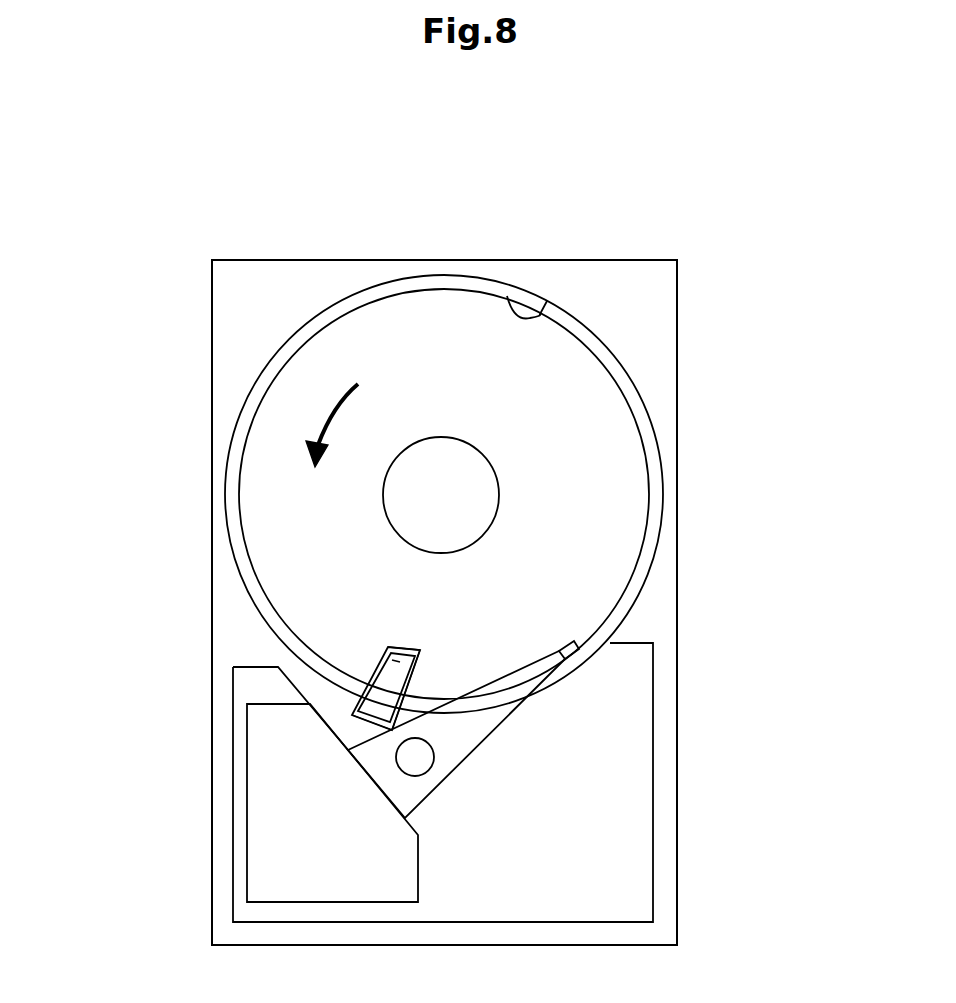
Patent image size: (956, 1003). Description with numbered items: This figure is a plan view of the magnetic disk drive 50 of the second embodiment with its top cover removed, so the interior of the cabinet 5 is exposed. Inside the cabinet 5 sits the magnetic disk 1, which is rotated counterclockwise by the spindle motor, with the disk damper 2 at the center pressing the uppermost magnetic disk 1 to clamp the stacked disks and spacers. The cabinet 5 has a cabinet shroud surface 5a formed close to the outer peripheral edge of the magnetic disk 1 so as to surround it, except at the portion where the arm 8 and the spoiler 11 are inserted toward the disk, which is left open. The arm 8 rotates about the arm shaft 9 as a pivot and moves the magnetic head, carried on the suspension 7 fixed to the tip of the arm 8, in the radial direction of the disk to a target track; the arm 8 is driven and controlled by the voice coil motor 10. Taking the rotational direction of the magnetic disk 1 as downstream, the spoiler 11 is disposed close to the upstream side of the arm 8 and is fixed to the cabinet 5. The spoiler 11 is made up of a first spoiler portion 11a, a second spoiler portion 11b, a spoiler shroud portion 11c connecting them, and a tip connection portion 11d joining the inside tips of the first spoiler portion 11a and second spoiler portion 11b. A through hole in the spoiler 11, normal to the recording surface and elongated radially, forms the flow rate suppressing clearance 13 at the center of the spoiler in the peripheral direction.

The magnetic disk drive 50 is at (624, 236).
The cabinet 5 is at (665, 347).
The cabinet shroud surface 5a is at (510, 300).
The magnetic disk 1 is at (615, 520).
The disk damper 2 is at (470, 480).
The suspension 7 is at (583, 653).
The arm 8 is at (492, 715).
The arm shaft 9 is at (417, 770).
The voice coil motor 10 is at (260, 868).
The spoiler 11 is at (358, 676).
The first spoiler portion 11a is at (373, 670).
The second spoiler portion 11b is at (414, 676).
The spoiler shroud portion 11c is at (363, 718).
The tip connection portion 11d is at (403, 652).
The flow rate suppressing clearance 13 is at (397, 668).